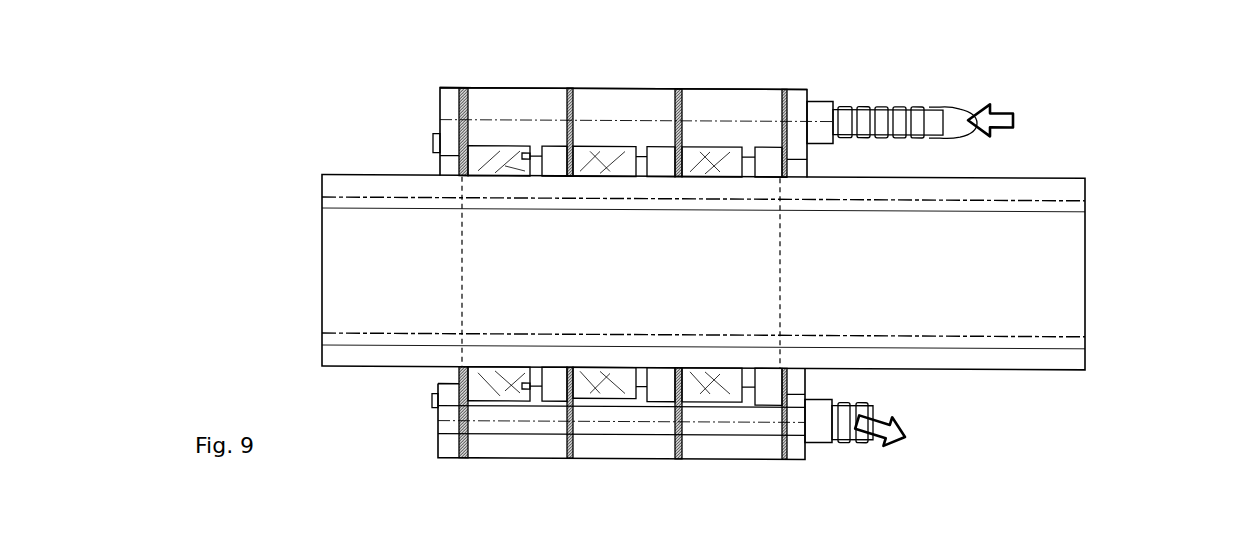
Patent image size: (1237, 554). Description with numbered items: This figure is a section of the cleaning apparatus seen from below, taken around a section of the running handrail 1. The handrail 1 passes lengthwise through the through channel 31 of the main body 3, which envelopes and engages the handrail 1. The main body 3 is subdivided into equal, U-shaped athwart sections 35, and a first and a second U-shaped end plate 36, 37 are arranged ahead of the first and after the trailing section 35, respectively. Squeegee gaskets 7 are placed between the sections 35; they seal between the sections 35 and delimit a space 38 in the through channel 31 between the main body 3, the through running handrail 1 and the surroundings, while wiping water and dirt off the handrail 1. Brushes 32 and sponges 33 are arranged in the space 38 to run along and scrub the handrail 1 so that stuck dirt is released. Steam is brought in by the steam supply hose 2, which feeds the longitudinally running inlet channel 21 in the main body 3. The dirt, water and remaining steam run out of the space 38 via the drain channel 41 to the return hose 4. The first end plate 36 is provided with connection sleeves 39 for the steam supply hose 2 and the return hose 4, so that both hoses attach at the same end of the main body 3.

The handrail 1 is at (1067, 352).
The steam supply hose 2 is at (907, 115).
The main body 3 is at (480, 63).
The return hose 4 is at (870, 410).
The squeegee gasket 7 is at (673, 130).
The inlet channel 21 is at (803, 88).
The through channel 31 is at (426, 177).
The brushes 32 is at (480, 155).
The sponges 33 is at (495, 382).
The sections 35 is at (545, 457).
The first end plate 36 is at (792, 118).
The second end plate 37 is at (448, 95).
The space 38 is at (779, 263).
The connection sleeves 39 is at (815, 110).
The drain channel 41 is at (543, 420).